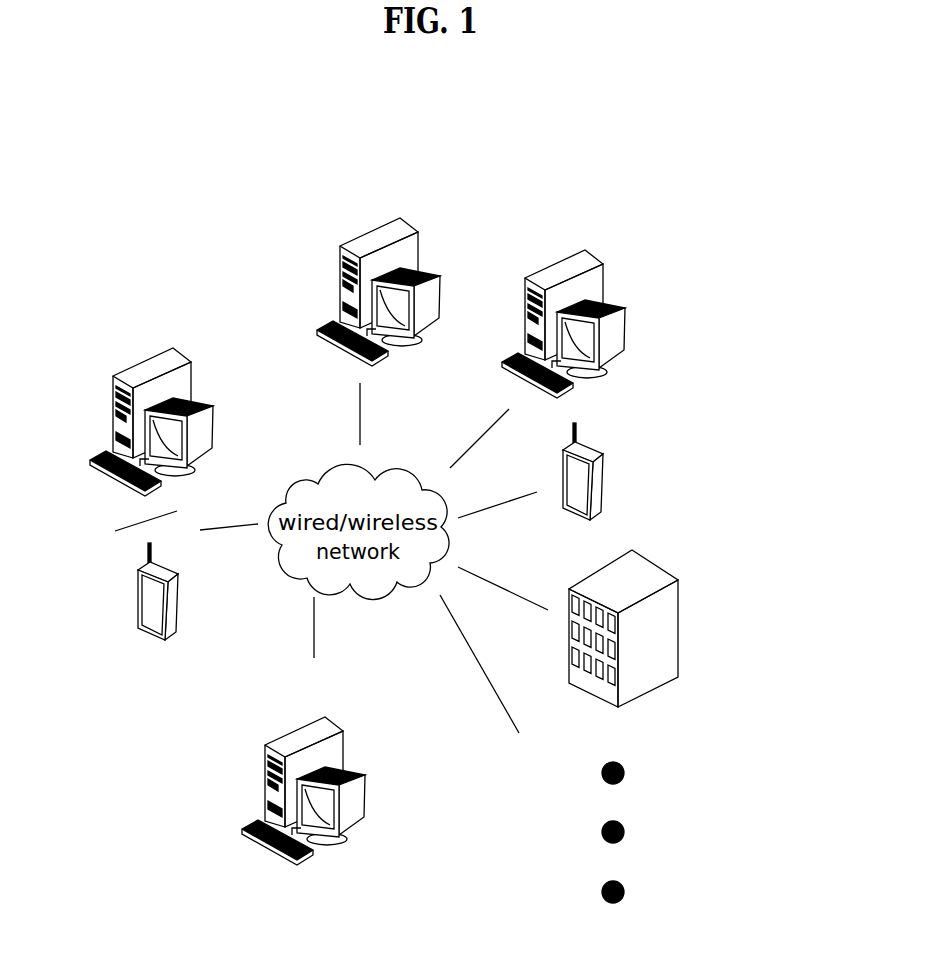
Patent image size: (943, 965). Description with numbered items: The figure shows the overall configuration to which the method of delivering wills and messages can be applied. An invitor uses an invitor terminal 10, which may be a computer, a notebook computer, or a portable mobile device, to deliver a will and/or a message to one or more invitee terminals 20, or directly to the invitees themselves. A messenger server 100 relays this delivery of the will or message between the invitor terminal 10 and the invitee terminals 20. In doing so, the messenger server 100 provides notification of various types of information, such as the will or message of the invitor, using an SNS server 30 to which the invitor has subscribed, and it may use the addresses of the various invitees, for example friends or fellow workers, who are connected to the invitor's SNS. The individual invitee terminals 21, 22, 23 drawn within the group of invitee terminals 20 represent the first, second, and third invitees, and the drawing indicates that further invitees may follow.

The invitor terminal 10 is at (127, 600).
The invitee terminals 20 is at (753, 397).
The invitee #1 terminal 21 is at (603, 282).
The invitee #2 terminal 22 is at (601, 452).
The invitee #3 terminal 23 is at (656, 562).
The SNS server 30 is at (318, 278).
The messenger server 100 is at (248, 779).